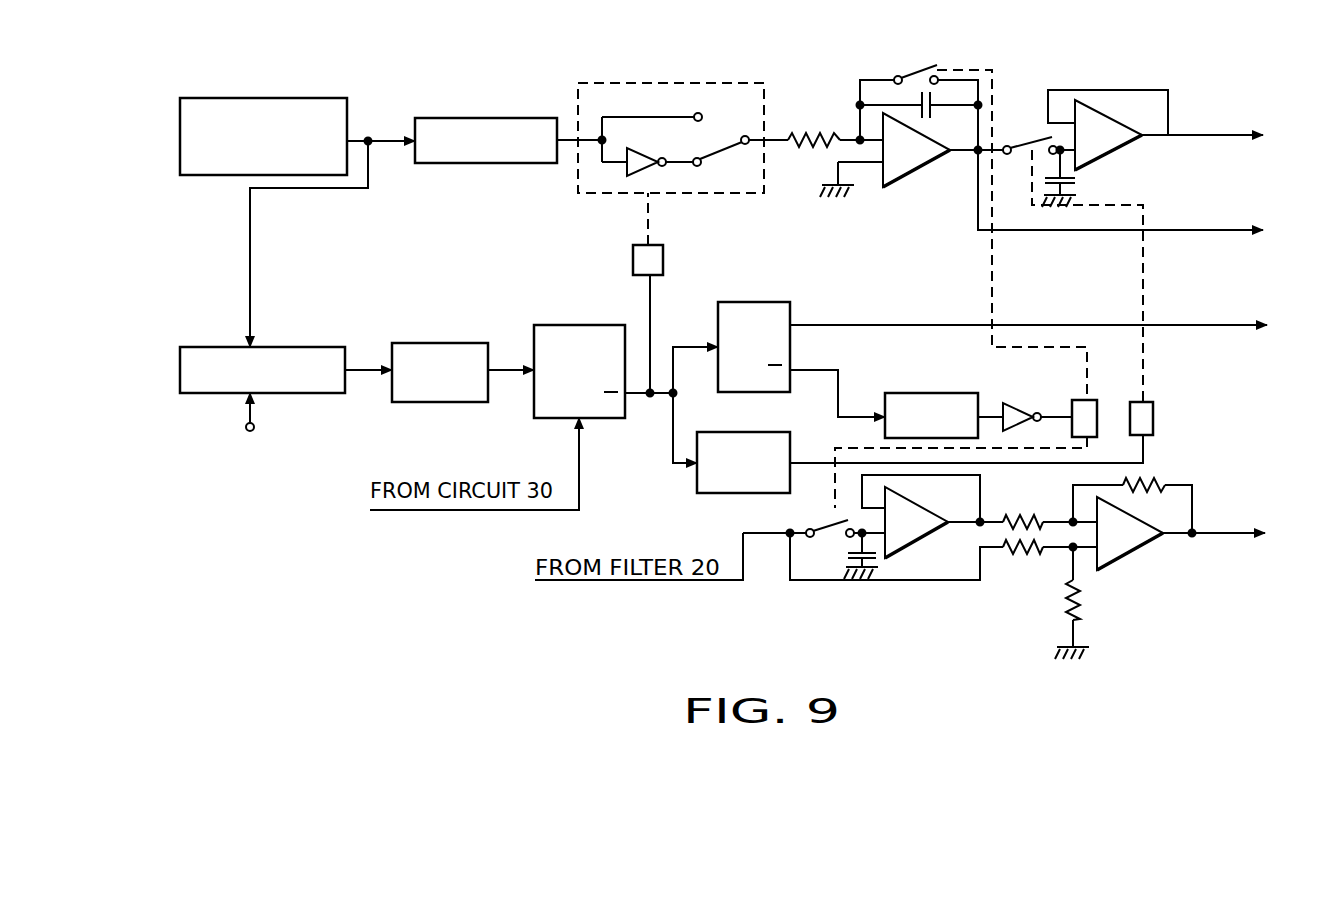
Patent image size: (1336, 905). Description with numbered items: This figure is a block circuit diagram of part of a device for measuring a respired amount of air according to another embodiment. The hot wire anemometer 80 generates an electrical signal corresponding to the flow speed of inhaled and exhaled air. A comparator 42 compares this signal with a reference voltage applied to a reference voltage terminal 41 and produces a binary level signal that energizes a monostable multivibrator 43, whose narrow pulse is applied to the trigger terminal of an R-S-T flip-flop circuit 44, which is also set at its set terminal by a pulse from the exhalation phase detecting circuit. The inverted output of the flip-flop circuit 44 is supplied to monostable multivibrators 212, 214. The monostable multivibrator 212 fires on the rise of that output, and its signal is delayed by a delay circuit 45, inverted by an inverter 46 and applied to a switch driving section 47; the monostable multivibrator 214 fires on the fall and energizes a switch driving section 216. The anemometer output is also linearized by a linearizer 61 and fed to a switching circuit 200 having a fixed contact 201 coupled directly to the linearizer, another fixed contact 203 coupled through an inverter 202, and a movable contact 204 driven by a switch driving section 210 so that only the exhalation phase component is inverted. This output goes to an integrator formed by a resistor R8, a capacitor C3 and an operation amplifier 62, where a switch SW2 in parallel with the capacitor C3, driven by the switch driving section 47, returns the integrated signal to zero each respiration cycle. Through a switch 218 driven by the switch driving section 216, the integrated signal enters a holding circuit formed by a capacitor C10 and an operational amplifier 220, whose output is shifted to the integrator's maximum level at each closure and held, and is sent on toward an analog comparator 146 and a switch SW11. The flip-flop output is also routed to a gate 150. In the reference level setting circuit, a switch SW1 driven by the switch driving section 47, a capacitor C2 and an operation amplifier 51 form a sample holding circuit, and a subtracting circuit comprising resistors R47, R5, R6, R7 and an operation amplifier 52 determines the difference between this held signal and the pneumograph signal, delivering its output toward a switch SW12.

The hot wire anemometer 80 is at (213, 176).
The linearizer 61 is at (515, 118).
The switching circuit 200 is at (578, 188).
The fixed contact 201 is at (700, 113).
The inverter 202 is at (644, 136).
The fixed contact 203 is at (701, 164).
The movable contact 204 is at (754, 122).
The resistor R8 is at (795, 146).
The switch SW2 is at (913, 65).
The capacitor C3 is at (932, 110).
The operation amplifier 62 is at (920, 168).
The switch 218 is at (1020, 143).
The operational amplifier 220 is at (1120, 148).
The capacitor C10 is at (1075, 180).
The analog comparator 146 is at (1237, 174).
The switch SW11 is at (1216, 243).
The gate 150 is at (1214, 348).
The switch SW12 is at (1234, 553).
The reference voltage terminal 41 is at (250, 431).
The comparator 42 is at (300, 393).
The monostable multivibrator 43 is at (452, 402).
The R-S-T flip-flop circuit 44 is at (552, 418).
The switch driving section 210 is at (663, 262).
The monostable multivibrator 212 is at (790, 345).
The monostable multivibrator 214 is at (718, 493).
The delay circuit 45 is at (968, 393).
The inverter 46 is at (1022, 410).
The switch driving section 47 is at (1095, 408).
The switch driving section 216 is at (1153, 416).
The switch SW1 is at (839, 522).
The capacitor C2 is at (848, 556).
The operation amplifier 51 is at (920, 540).
The resistor R47 is at (1042, 508).
The resistor R7 is at (1158, 484).
The resistor R5 is at (1028, 554).
The resistor R6 is at (1080, 600).
The operation amplifier 52 is at (1132, 555).